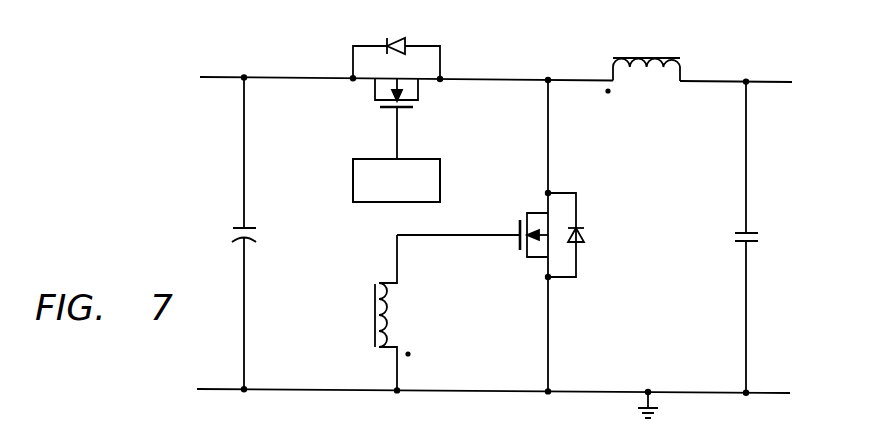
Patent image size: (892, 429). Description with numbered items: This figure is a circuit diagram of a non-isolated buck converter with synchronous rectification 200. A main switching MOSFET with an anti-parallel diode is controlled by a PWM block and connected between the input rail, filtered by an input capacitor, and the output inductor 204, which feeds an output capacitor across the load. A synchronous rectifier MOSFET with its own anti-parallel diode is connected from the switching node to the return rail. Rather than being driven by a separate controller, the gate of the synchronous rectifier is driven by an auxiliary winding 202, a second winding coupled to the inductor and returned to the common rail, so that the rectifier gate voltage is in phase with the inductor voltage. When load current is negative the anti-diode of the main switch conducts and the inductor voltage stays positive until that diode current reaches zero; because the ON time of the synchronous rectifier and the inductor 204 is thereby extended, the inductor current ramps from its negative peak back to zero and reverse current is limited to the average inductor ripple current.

The non-isolated buck converter with synchronous rectification 200 is at (138, 182).
The auxiliary winding 202 is at (378, 280).
The inductor 204 is at (683, 69).